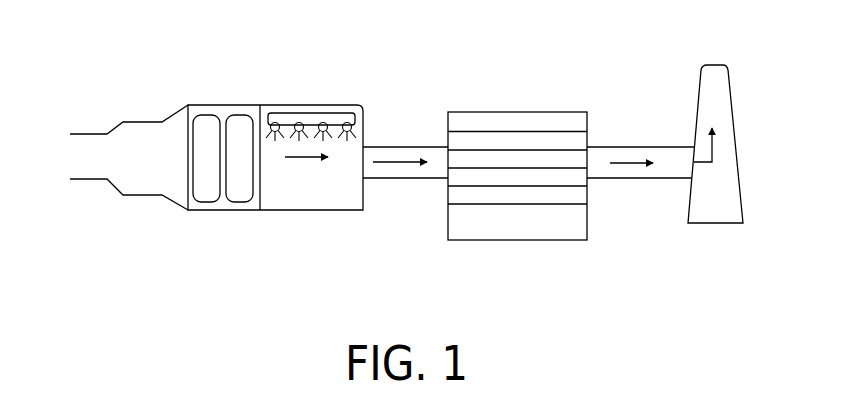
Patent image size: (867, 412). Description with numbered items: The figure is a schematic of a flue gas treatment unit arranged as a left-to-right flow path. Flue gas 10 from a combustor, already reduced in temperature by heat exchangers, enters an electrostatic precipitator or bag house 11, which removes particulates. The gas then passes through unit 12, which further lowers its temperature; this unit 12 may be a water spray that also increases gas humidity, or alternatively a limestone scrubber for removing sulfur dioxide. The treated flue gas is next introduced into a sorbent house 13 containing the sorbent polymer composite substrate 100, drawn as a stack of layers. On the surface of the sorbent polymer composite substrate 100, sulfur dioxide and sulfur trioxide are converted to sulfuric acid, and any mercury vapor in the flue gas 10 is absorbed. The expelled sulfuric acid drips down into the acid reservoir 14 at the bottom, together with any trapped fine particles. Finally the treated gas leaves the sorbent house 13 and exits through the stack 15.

The flue gas 10 is at (165, 157).
The electrostatic precipitator or bag house 11 is at (237, 112).
The unit 12 is at (308, 110).
The sorbent house 13 is at (478, 112).
The acid reservoir 14 is at (508, 217).
The sorbent polymer composite substrate 100 is at (570, 190).
The stack 15 is at (665, 144).